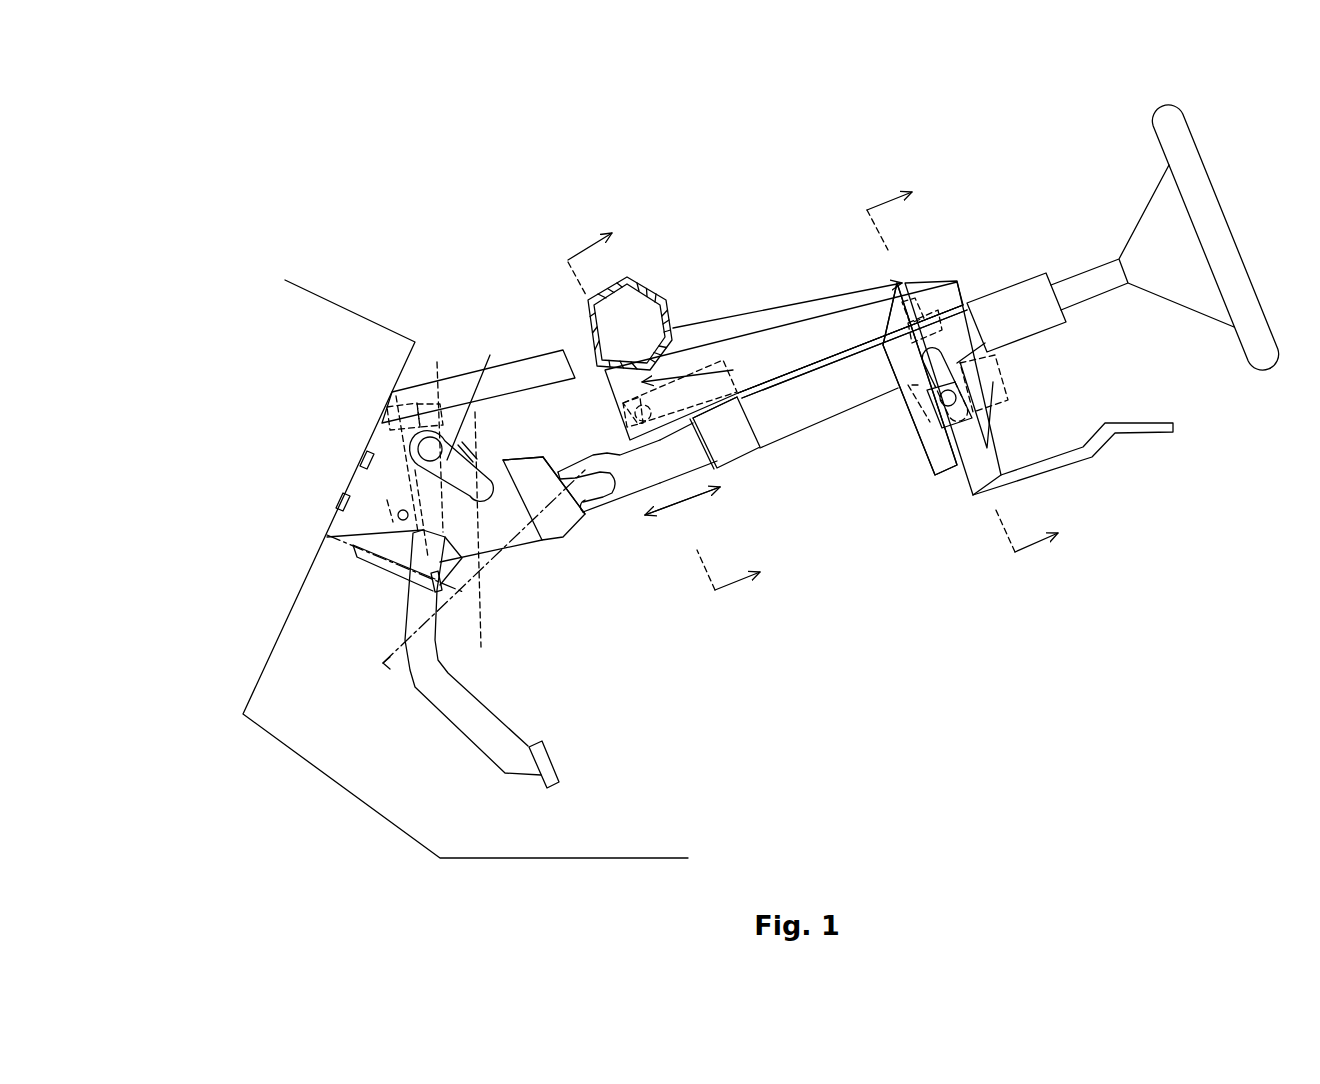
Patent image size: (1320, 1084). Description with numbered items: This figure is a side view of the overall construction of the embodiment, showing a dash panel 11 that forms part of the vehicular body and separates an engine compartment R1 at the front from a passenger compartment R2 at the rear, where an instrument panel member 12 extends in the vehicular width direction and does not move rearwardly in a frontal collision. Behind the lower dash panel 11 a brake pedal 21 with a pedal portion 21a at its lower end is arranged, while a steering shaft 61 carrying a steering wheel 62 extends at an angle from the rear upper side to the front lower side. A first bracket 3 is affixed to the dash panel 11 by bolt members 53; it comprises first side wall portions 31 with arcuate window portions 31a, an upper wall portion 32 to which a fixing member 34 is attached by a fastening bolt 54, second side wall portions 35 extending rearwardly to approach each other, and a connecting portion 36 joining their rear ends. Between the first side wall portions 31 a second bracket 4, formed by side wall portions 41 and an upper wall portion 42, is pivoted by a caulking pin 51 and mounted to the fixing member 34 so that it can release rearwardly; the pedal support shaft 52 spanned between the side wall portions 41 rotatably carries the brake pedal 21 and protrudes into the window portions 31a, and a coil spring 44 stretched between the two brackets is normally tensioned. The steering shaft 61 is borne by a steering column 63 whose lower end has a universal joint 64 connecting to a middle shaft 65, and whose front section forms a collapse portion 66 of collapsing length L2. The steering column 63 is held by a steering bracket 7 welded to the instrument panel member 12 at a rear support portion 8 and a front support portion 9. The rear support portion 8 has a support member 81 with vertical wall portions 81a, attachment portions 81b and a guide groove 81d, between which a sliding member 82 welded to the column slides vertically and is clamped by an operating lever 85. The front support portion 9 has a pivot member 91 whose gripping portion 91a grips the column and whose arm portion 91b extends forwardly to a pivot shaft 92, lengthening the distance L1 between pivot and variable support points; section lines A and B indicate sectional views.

The dash panel 11 is at (262, 686).
The instrument panel member 12 is at (637, 287).
The brake pedal 21 is at (508, 778).
The pedal portion 21a is at (560, 765).
The first bracket 3 is at (485, 440).
The first side wall portions 31 is at (498, 559).
The window portions 31a is at (503, 463).
The upper wall portion 32 is at (457, 362).
The fixing member 34 is at (522, 350).
The second side wall portions 35 is at (565, 537).
The connecting portion 36 is at (586, 516).
The second bracket 4 is at (393, 483).
The side wall portions 41 is at (508, 546).
The upper wall portion 42 is at (390, 393).
The coil spring 44 is at (375, 572).
The caulking pin 51 is at (398, 515).
The pedal support shaft 52 is at (477, 394).
The bolt members 53 is at (364, 452).
The fastening bolt 54 is at (420, 405).
The steering shaft 61 is at (1077, 272).
The steering wheel 62 is at (1191, 132).
The steering column 63 is at (820, 427).
The universal joint 64 is at (577, 456).
The middle shaft 65 is at (534, 571).
The collapse portion 66 is at (721, 502).
The steering bracket 7 is at (808, 317).
The rear support portion 8 is at (1003, 278).
The support member 81 is at (911, 428).
The vertical wall portions 81a is at (930, 460).
The attachment portions 81b is at (893, 340).
The guide groove 81d is at (992, 404).
The sliding member 82 is at (997, 358).
The operating lever 85 is at (1045, 463).
The front support portion 9 is at (783, 468).
The pivot member 91 is at (746, 452).
The gripping portion 91a is at (753, 427).
The arm portion 91b is at (745, 368).
The pivot shaft 92 is at (630, 406).
The distance between pivot point and variable support point L1 is at (765, 310).
The length of collapse portion L2 is at (682, 516).
The section A is at (955, 381).
The section B is at (661, 422).
The engine compartment R1 is at (224, 800).
The passenger compartment R2 is at (660, 803).